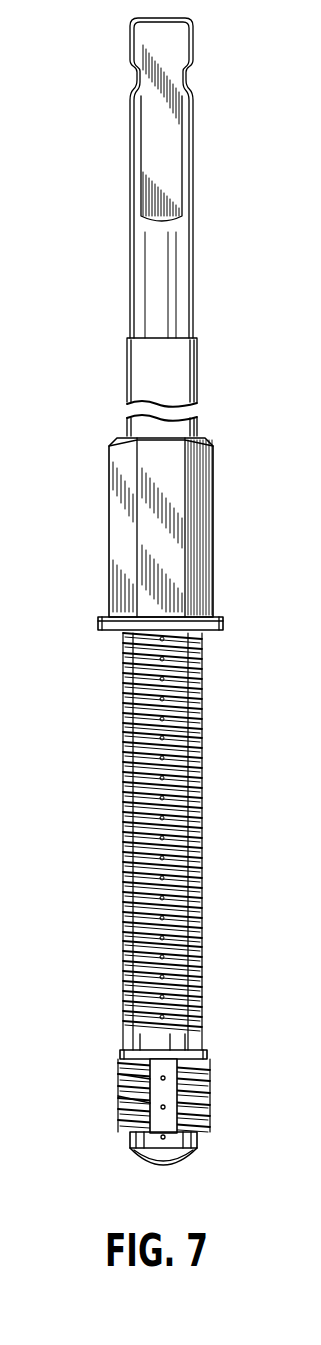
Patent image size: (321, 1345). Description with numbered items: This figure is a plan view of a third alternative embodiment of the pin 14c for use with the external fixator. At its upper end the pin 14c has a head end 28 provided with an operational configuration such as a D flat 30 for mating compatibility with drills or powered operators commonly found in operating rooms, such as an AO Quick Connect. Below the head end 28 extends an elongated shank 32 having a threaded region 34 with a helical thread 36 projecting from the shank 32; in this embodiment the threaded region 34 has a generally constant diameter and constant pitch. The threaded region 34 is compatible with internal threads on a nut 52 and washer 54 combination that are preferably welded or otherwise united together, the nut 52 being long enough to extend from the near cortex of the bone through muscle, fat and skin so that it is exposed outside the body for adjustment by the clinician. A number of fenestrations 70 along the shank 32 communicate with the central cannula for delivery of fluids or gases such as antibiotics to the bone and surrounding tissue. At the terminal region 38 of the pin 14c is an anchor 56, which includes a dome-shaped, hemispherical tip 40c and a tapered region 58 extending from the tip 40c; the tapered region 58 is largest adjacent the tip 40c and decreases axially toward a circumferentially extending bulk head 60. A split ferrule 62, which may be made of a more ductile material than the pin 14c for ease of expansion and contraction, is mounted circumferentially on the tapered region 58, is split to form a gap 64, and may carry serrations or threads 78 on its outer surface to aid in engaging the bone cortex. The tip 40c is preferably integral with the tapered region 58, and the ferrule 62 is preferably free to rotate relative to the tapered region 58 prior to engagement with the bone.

The pin 14c is at (48, 236).
The head end 28 is at (130, 44).
The D flat 30 is at (150, 133).
The elongated shank 32 is at (126, 378).
The nut 52 is at (110, 558).
The washer 54 is at (222, 622).
The threaded region 34 is at (112, 818).
The helical thread 36 is at (203, 834).
The bulk head 60 is at (205, 1052).
The split ferrule 62 is at (210, 1077).
The gap 64 is at (165, 1120).
The fenestrations 70 is at (117, 1096).
The serrations or threads 78 is at (119, 1085).
The anchor 56 is at (210, 1146).
The tapered region 58 is at (132, 1138).
The tip 40c is at (163, 1166).
The terminal region 38 is at (75, 1158).